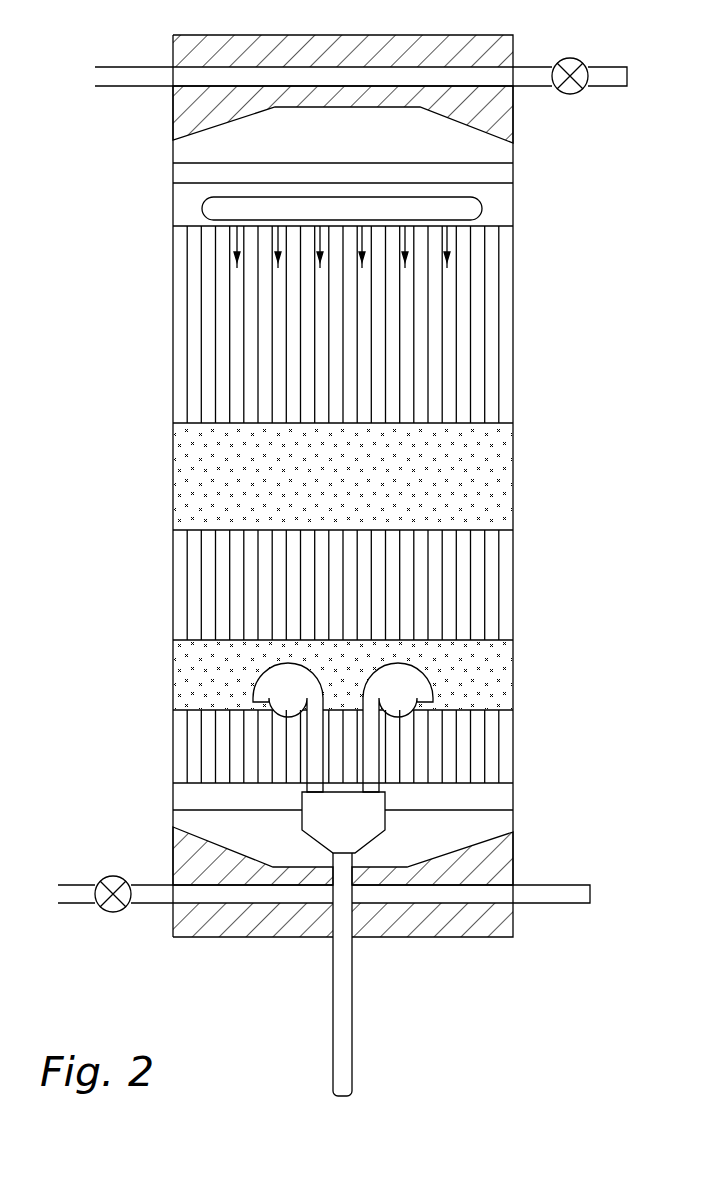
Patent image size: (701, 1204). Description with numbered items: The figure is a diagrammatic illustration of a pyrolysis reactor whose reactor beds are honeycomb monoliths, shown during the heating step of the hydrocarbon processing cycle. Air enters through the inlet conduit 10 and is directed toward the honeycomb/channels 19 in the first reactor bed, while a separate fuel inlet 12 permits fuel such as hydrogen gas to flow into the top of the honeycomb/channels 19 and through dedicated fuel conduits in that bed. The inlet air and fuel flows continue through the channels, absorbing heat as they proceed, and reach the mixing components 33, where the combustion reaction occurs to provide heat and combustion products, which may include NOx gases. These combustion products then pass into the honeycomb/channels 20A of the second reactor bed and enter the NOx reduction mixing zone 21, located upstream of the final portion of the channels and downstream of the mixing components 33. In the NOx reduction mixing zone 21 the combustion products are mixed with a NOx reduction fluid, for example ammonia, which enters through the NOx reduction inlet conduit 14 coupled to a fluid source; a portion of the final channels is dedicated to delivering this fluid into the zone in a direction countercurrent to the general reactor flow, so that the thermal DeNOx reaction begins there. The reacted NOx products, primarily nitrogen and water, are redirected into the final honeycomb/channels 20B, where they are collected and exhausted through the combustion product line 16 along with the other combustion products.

The inlet conduit 10 is at (133, 66).
The fuel inlet 12 is at (481, 211).
The honeycomb/channels 19 is at (473, 321).
The mixing components 33 is at (470, 479).
The honeycomb/channels 20A is at (477, 588).
The NOx reduction mixing zone 21 is at (472, 678).
The final honeycomb/channels 20B is at (477, 755).
The combustion product line 16 is at (550, 884).
The NOx reduction inlet conduit 14 is at (353, 1024).